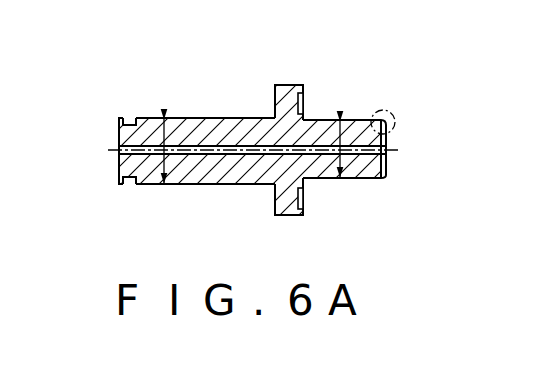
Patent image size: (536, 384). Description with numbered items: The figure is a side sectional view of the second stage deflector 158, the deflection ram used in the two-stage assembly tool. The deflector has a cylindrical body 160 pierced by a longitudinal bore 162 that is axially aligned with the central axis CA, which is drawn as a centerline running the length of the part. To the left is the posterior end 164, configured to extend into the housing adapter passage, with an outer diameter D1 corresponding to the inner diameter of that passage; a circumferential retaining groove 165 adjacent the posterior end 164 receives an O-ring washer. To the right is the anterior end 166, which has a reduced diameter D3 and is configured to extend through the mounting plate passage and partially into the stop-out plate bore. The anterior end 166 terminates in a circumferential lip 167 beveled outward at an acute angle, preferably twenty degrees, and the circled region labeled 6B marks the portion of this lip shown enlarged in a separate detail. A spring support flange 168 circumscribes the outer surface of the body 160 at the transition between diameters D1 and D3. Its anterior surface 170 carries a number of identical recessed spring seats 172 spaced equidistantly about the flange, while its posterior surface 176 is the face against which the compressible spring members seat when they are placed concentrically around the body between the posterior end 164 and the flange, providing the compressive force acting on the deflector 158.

The second stage deflector 158 is at (252, 88).
The cylindrical body 160 is at (233, 187).
The longitudinal bore 162 is at (195, 122).
The posterior end 164 is at (112, 163).
The circumferential retaining groove 165 is at (128, 179).
The anterior end 166 is at (400, 172).
The circumferential lip 167 is at (389, 179).
The spring support flange 168 is at (290, 83).
The anterior surface 170 is at (307, 205).
The recessed spring seats 172 is at (306, 100).
The posterior surface 176 is at (270, 100).
The outer diameter D1 is at (165, 160).
The reduced diameter D3 is at (341, 160).
The central axis CA is at (388, 150).
The detail view reference 6B is at (385, 110).